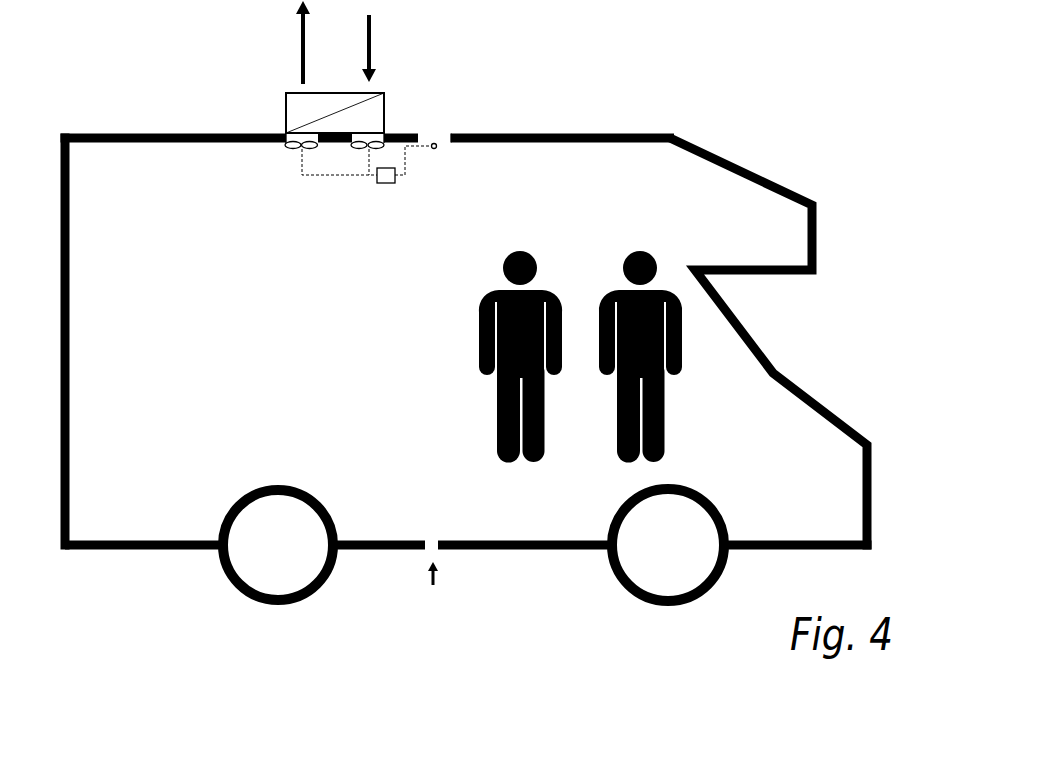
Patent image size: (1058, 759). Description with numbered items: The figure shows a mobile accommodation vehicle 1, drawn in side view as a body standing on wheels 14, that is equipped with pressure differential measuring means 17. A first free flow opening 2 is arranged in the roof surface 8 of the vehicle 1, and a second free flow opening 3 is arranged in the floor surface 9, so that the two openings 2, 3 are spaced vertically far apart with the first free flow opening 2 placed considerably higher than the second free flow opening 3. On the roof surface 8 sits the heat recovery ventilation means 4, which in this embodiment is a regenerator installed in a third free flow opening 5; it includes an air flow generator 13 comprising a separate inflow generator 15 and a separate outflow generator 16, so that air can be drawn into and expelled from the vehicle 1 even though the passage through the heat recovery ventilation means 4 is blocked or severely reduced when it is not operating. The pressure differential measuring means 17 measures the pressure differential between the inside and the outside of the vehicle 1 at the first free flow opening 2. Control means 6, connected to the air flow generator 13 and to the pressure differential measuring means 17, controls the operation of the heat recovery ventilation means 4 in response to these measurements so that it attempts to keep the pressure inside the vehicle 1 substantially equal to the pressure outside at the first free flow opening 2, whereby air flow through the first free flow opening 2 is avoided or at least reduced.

The mobile accommodation vehicle 1 is at (782, 92).
The first free flow opening 2 is at (437, 143).
The second free flow opening 3 is at (431, 552).
The heat recovery ventilation means 4 is at (293, 100).
The third free flow opening 5 is at (302, 90).
The control means 6 is at (393, 160).
The roof surface 8 is at (617, 133).
The floor surface 9 is at (555, 550).
The air flow generator 13 is at (302, 90).
The wheel 14 is at (700, 561).
The inflow generator 15 is at (387, 168).
The outflow generator 16 is at (290, 136).
The pressure differential measuring means 17 is at (452, 134).